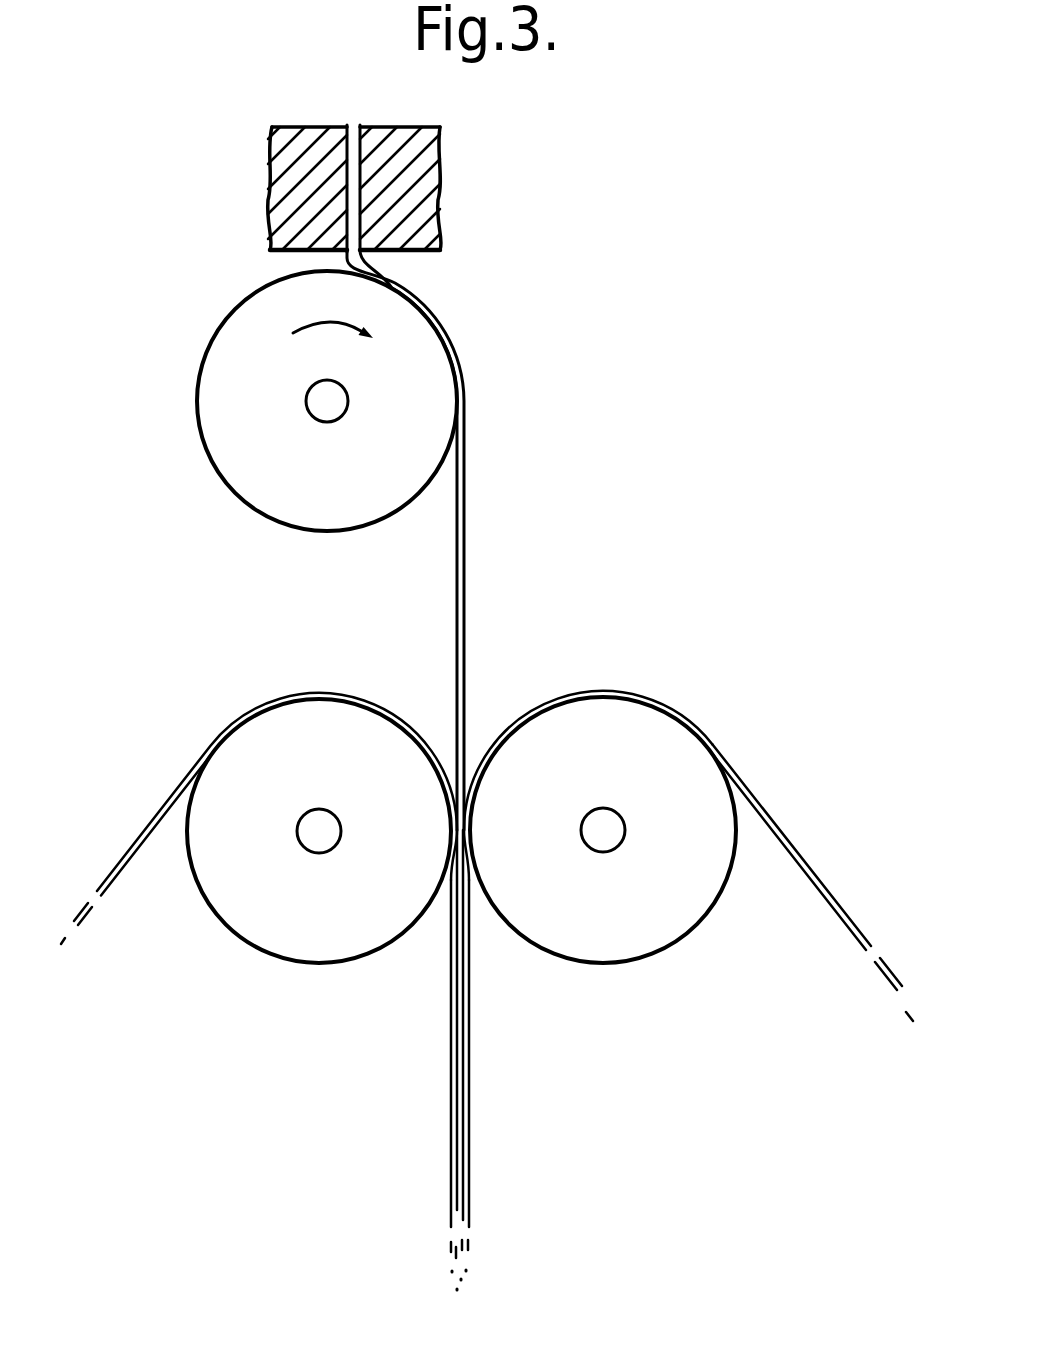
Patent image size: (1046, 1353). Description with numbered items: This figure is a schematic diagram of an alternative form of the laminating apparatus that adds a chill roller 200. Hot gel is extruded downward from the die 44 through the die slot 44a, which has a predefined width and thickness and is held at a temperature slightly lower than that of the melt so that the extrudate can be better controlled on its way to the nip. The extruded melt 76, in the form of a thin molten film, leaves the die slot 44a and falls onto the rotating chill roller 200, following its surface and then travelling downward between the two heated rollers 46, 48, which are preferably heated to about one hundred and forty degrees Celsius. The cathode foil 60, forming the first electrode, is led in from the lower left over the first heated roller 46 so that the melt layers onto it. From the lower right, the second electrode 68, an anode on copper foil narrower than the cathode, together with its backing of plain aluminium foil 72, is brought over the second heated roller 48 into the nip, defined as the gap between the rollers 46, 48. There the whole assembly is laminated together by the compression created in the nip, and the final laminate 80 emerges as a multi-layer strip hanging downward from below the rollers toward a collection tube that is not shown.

The die 44 is at (427, 163).
The die slot 44a is at (362, 256).
The chill roller 200 is at (252, 333).
The extruded melt 76 is at (432, 312).
The first heated roller 46 is at (255, 913).
The second heated roller 48 is at (645, 927).
The cathode foil 60 is at (160, 818).
The second electrode 68 is at (688, 856).
The aluminium foil 72 is at (757, 805).
The final laminate 80 is at (458, 1052).